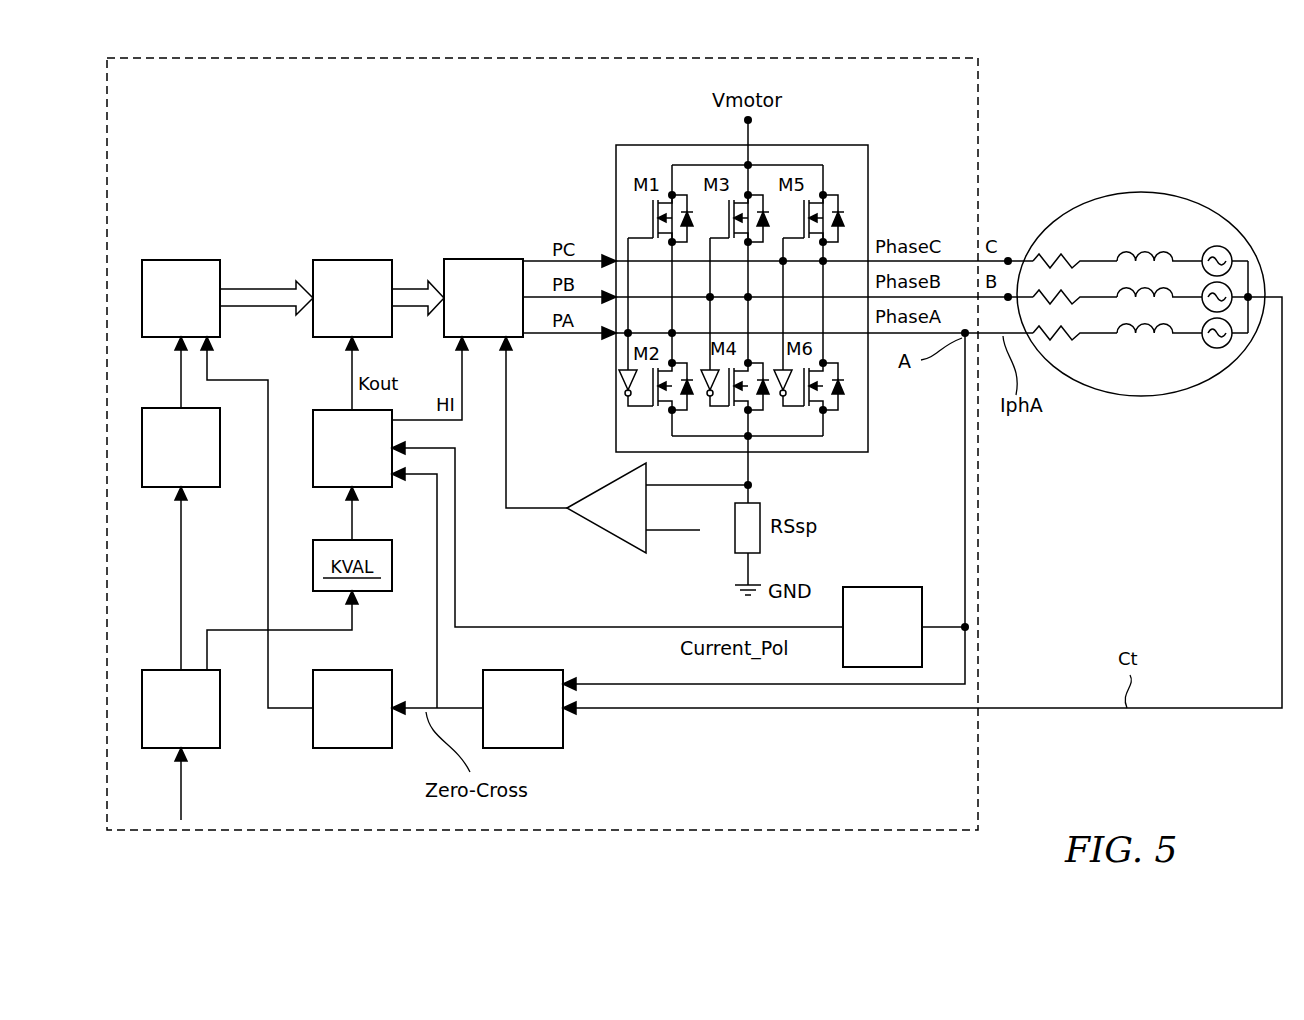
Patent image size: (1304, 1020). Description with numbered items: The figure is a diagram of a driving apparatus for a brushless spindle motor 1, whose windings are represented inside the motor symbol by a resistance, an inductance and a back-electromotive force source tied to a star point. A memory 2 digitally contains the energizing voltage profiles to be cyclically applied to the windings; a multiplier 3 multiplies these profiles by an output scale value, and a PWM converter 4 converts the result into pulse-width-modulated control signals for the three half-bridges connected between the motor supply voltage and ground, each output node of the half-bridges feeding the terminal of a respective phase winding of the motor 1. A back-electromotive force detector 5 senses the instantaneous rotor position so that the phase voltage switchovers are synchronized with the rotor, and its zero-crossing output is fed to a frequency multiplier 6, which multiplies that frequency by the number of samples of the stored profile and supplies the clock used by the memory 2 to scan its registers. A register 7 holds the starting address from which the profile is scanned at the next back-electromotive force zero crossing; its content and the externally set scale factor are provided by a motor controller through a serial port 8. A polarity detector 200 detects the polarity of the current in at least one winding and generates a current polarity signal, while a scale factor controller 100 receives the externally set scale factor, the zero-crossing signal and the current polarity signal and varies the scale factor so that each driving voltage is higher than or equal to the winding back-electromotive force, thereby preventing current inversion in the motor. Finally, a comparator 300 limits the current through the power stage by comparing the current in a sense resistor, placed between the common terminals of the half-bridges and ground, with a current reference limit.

The spindle motor 1 is at (1170, 198).
The memory 2 is at (196, 260).
The multiplier 3 is at (370, 260).
The PWM converter 4 is at (504, 259).
The Bemf detector 5 is at (505, 670).
The frequency multiplier 6 is at (340, 670).
The register 7 is at (142, 430).
The serial port 8 is at (142, 680).
The scale factor controller 100 is at (313, 430).
The polarity detector 200 is at (865, 587).
The comparator 300 is at (625, 497).